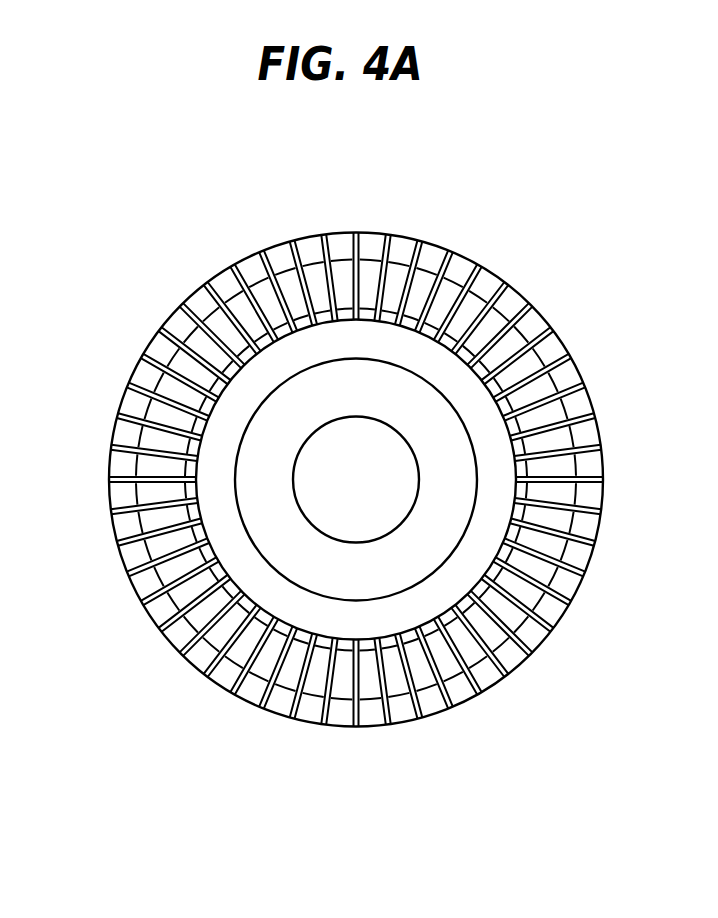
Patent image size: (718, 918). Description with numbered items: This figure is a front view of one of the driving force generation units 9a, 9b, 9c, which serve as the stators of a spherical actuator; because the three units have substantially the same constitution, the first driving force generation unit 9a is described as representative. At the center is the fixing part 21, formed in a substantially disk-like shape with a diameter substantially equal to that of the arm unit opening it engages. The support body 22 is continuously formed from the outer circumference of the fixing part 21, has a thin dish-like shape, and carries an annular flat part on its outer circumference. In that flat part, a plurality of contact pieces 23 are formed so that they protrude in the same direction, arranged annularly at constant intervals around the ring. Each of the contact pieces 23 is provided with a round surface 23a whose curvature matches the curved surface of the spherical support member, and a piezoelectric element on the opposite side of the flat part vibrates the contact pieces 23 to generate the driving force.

The first driving force generation unit 9a is at (356, 429).
The second driving force generation unit 9b is at (356, 429).
The third driving force generation unit 9c is at (480, 232).
The fixing part 21 is at (380, 500).
The support body 22 is at (450, 453).
The contact pieces 23 is at (312, 252).
The round surface 23a is at (181, 362).